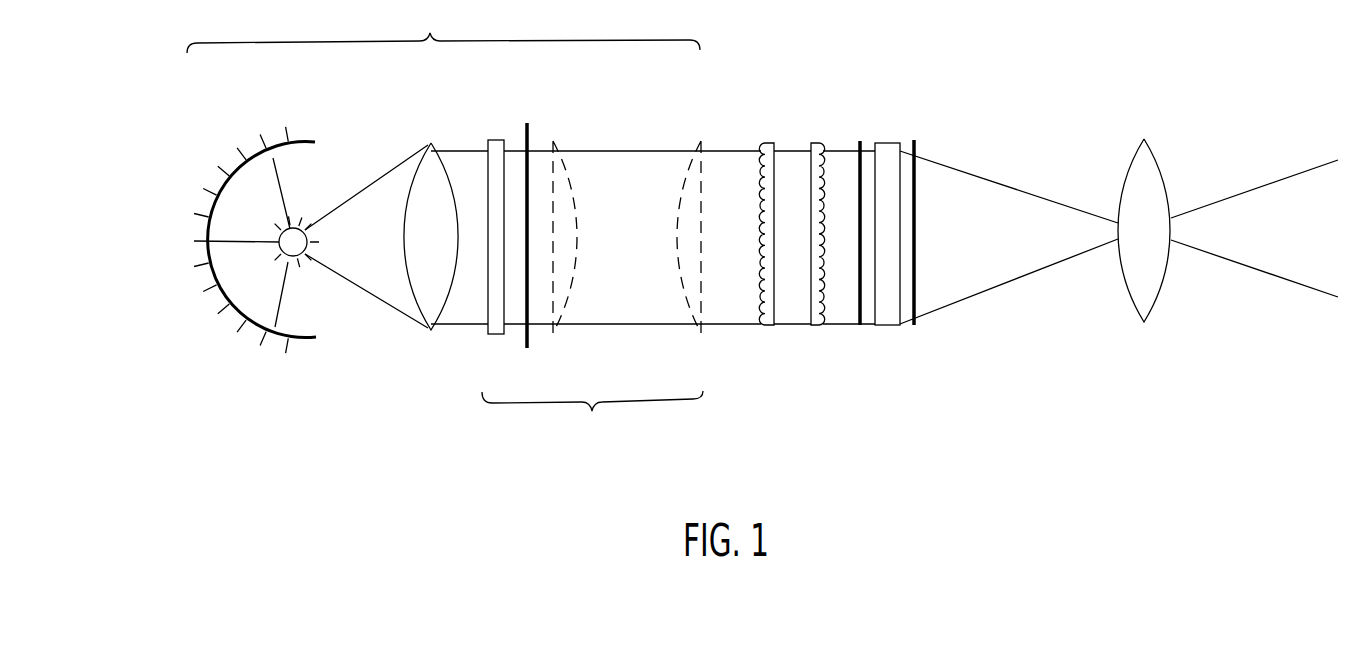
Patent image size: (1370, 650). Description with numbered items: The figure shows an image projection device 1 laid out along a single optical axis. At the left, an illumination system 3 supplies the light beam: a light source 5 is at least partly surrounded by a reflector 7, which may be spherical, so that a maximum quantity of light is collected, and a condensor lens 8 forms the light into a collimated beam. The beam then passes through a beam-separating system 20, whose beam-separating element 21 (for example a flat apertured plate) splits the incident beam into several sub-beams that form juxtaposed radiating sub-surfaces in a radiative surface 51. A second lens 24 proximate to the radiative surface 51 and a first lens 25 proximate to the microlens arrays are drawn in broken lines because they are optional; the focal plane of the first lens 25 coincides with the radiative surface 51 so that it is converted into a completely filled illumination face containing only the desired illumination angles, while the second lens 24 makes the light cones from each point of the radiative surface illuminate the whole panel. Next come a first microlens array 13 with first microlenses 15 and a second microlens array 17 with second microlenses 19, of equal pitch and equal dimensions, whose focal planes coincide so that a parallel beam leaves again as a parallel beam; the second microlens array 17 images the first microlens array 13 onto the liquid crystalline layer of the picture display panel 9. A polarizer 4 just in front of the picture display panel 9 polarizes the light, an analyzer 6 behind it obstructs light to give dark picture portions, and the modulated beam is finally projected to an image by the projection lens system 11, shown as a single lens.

The image projection device 1 is at (342, 420).
The illumination system 3 is at (443, 31).
The polarizer 4 is at (858, 310).
The light source 5 is at (294, 236).
The analyzer 6 is at (917, 308).
The reflector 7 is at (258, 153).
The condensor lens 8 is at (430, 170).
The picture display panel 9 is at (890, 165).
The projection lens system 11 is at (1139, 173).
The first microlens array 13 is at (752, 230).
The first microlenses 15 is at (760, 150).
The second microlens array 17 is at (829, 230).
The second microlenses 19 is at (824, 150).
The beam-separating system 20 is at (592, 416).
The beam-separating element 21 is at (495, 321).
The second lens 24 is at (573, 322).
The first lens 25 is at (683, 322).
The radiative surface 51 is at (531, 313).